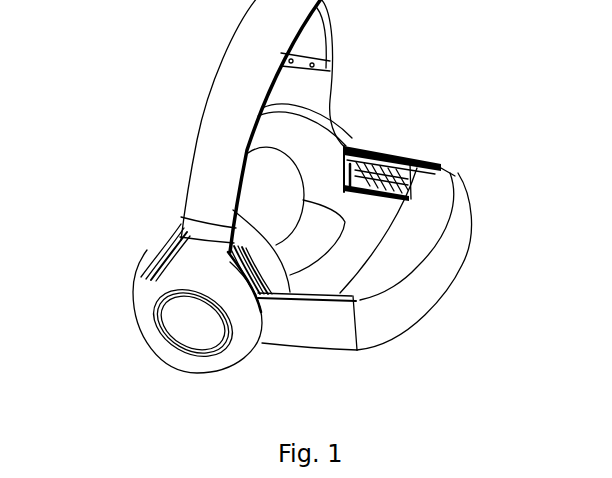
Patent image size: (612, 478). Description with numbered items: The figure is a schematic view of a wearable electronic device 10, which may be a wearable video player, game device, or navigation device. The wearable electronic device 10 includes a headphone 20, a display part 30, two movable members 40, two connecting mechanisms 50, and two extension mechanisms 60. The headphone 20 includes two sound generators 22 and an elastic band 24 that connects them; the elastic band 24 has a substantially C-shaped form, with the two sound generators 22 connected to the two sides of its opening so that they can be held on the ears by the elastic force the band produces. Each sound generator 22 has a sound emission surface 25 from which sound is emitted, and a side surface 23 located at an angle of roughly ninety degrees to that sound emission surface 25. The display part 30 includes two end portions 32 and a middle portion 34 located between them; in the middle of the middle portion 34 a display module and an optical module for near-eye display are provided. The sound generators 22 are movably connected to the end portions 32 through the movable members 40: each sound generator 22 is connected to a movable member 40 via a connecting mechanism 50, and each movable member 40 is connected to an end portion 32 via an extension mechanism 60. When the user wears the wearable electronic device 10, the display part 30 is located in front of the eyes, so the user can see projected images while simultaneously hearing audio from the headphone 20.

The wearable electronic device 10 is at (461, 36).
The headphone 20 is at (74, 159).
The sound generator 22 is at (162, 243).
The side surface 23 is at (338, 148).
The elastic band 24 is at (212, 143).
The sound emission surface 25 is at (267, 167).
The display part 30 is at (547, 170).
The end portion 32 is at (433, 170).
The middle portion 34 is at (455, 268).
The movable member 40 is at (317, 338).
The connecting mechanism 50 is at (365, 150).
The extension mechanism 60 is at (413, 157).